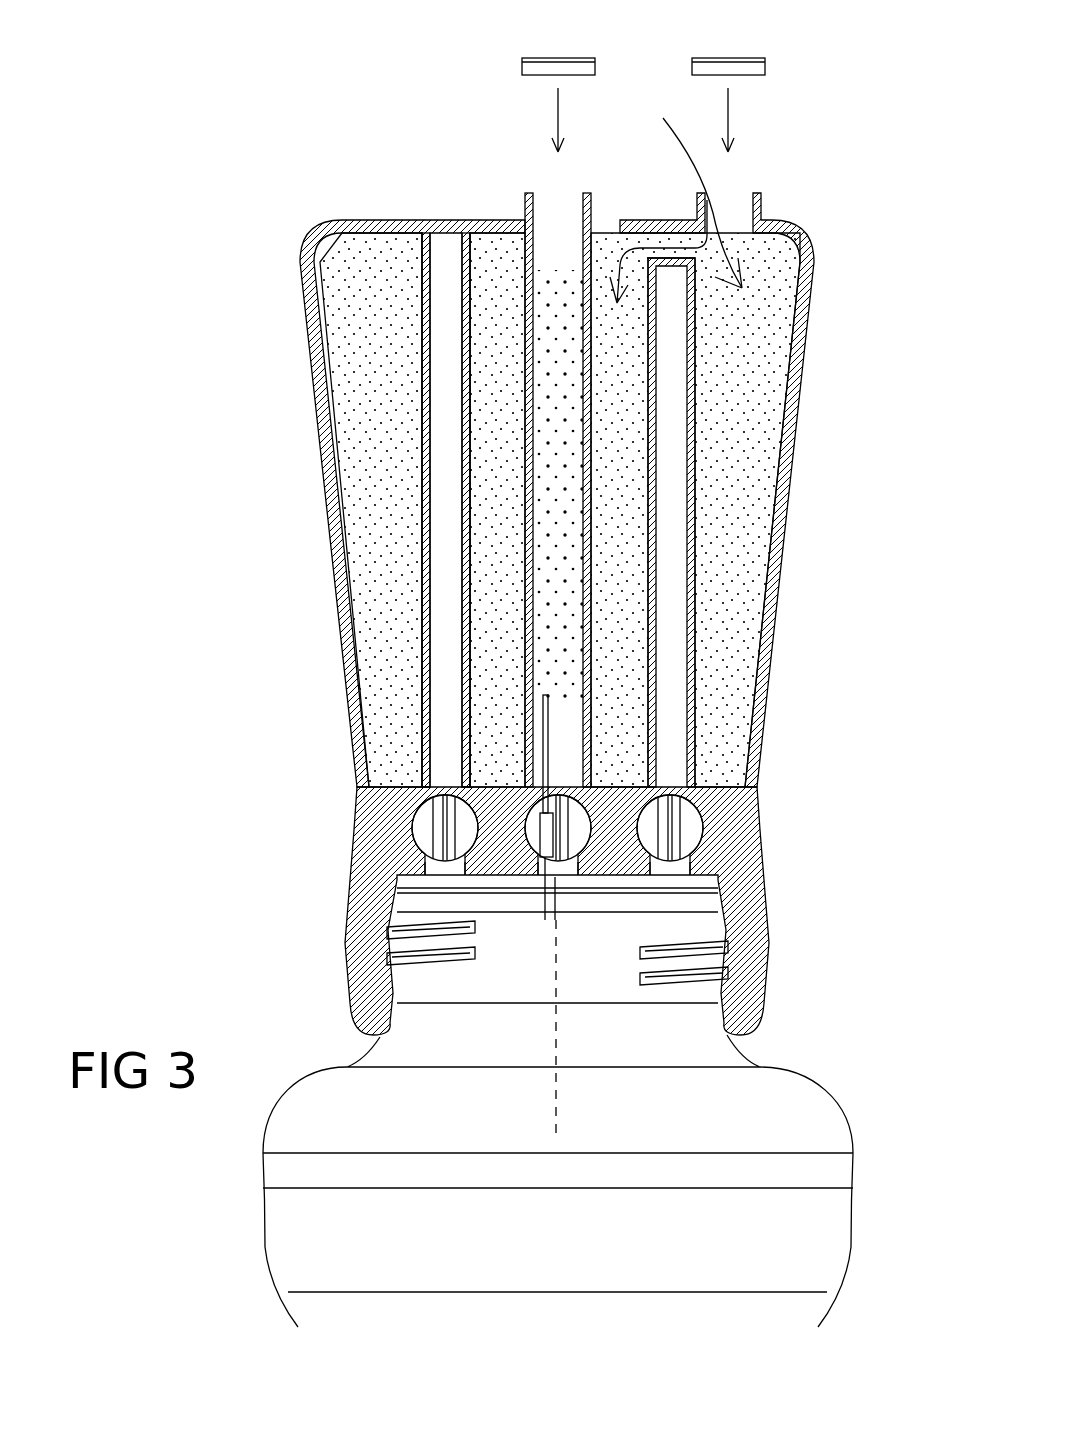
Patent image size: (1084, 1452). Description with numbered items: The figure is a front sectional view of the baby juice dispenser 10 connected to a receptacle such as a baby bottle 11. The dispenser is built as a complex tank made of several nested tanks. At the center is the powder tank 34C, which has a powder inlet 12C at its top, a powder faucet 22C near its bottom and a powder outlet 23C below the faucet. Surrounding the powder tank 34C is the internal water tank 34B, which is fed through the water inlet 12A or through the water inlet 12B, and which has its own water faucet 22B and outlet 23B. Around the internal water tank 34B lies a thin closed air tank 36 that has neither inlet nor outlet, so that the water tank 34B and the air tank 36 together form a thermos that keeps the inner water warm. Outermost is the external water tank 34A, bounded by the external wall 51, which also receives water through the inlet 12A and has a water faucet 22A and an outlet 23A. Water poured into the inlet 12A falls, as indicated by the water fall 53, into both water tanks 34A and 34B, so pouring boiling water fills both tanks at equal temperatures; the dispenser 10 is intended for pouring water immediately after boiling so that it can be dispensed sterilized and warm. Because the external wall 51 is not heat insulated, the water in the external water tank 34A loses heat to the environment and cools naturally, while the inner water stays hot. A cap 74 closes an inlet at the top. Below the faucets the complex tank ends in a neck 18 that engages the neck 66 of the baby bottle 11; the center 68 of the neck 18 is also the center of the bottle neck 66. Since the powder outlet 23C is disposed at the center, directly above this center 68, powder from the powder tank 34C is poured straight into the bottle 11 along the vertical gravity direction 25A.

The baby juice dispenser 10 is at (250, 386).
The baby bottle 11 is at (193, 1247).
The water inlet 12A is at (728, 213).
The water inlet 12B is at (608, 220).
The powder inlet 12C is at (560, 203).
The neck of complex tank 18 is at (753, 980).
The water faucet 22A is at (677, 837).
The water faucet 22B is at (427, 828).
The powder faucet 22C is at (577, 790).
The outlet of water tank 34A 23A is at (670, 870).
The outlet of water tank 34B 23B is at (440, 867).
The powder outlet 23C is at (563, 870).
The vertical gravity direction 25A is at (547, 715).
The external water tank 34A is at (331, 271).
The internal water tank 34B is at (502, 252).
The powder tank 34C is at (555, 428).
The closed air thin tank 36 is at (440, 597).
The external wall 51 is at (790, 455).
The water fall from inlet 12A 53 is at (693, 187).
The neck of baby bottle 66 is at (428, 980).
The center of neck 68 is at (572, 1092).
The cap 74 is at (560, 68).